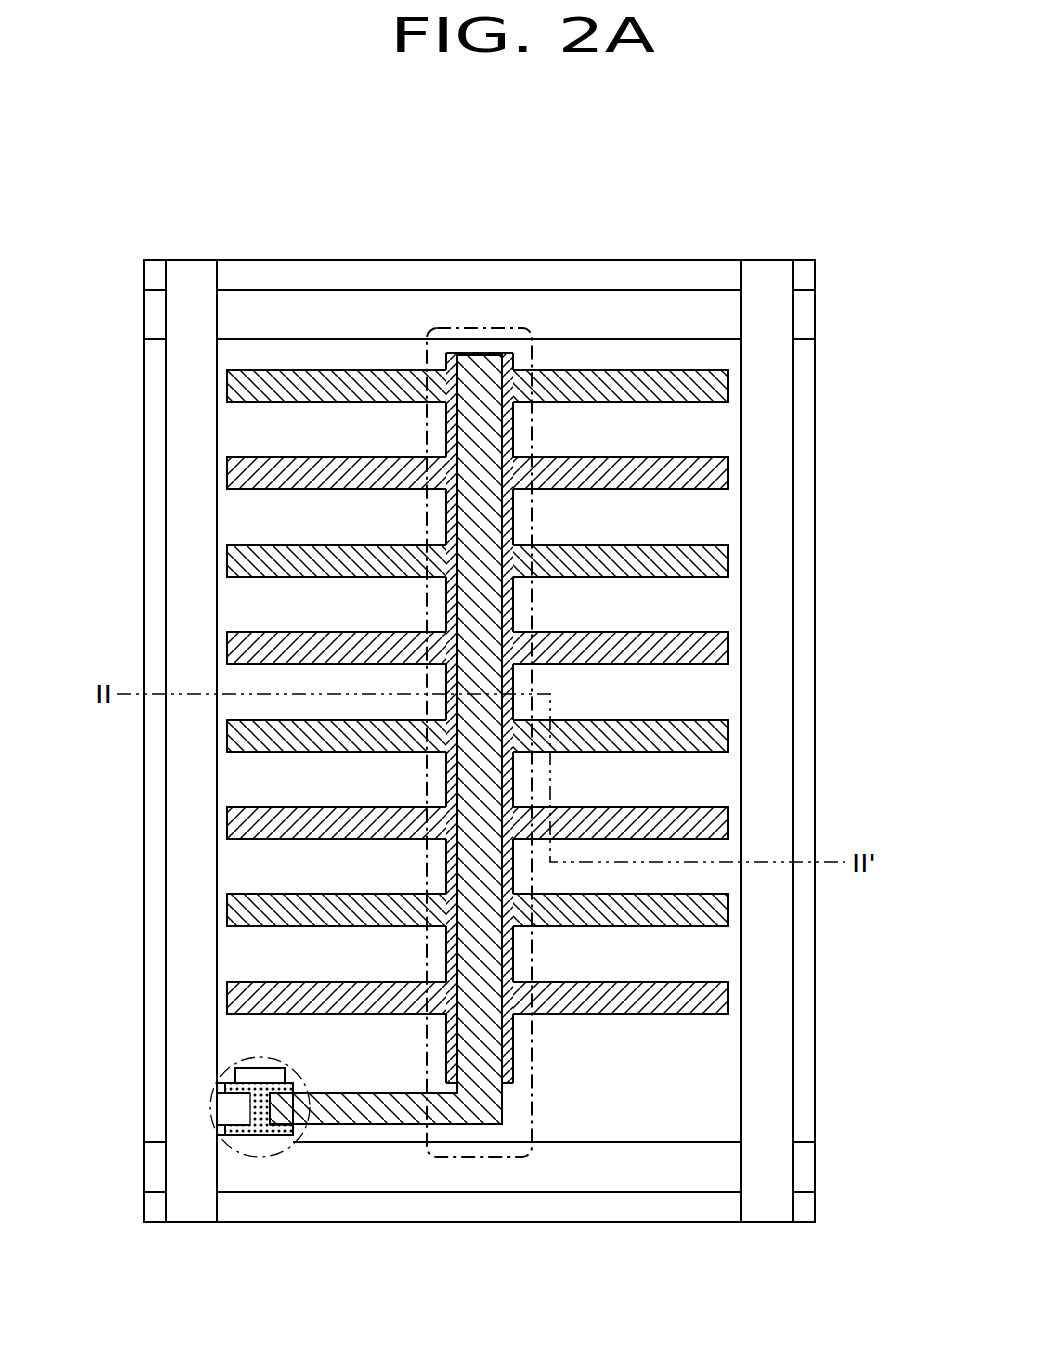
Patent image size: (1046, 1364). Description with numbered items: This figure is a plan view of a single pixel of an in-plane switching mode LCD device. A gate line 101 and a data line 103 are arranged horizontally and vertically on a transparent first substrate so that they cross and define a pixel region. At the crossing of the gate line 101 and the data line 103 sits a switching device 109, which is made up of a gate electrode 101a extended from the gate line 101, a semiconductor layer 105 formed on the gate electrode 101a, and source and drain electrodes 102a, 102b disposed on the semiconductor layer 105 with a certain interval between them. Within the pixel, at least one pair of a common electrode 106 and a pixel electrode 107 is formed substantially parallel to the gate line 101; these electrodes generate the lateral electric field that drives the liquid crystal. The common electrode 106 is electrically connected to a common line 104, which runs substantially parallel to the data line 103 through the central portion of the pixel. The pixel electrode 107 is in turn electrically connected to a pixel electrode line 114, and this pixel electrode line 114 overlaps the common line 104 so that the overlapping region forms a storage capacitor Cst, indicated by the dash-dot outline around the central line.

The gate line 101 is at (392, 1183).
The gate electrode 101a is at (243, 1070).
The source electrode 102a is at (233, 1108).
The drain electrode 102b is at (287, 1140).
The data line 103 is at (190, 1213).
The common line 104 is at (516, 1058).
The semiconductor layer 105 is at (258, 1135).
The common electrode 106 is at (728, 473).
The pixel electrode 107 is at (728, 558).
The switching device 109 is at (210, 1133).
The pixel electrode line 114 is at (481, 1124).
The storage capacitor Cst is at (485, 330).